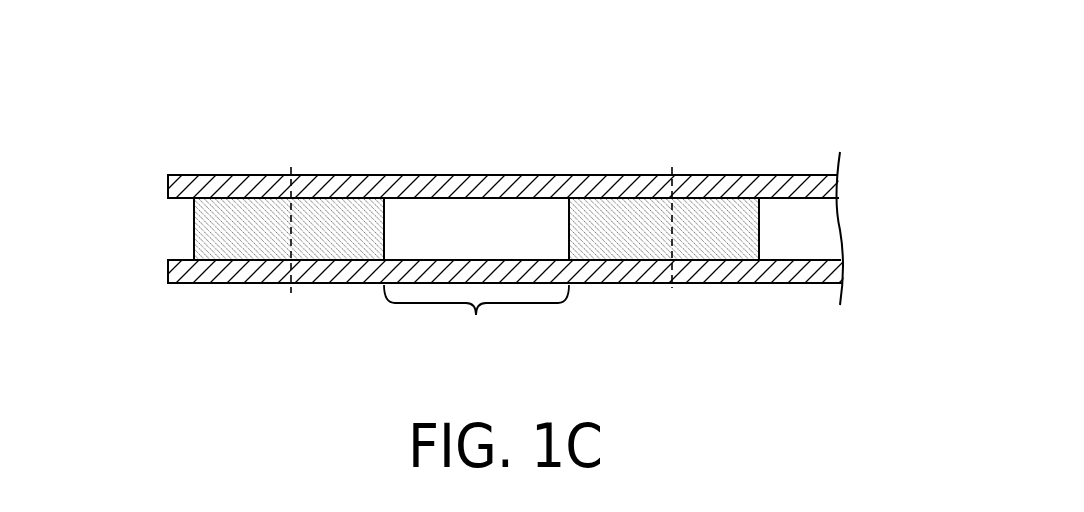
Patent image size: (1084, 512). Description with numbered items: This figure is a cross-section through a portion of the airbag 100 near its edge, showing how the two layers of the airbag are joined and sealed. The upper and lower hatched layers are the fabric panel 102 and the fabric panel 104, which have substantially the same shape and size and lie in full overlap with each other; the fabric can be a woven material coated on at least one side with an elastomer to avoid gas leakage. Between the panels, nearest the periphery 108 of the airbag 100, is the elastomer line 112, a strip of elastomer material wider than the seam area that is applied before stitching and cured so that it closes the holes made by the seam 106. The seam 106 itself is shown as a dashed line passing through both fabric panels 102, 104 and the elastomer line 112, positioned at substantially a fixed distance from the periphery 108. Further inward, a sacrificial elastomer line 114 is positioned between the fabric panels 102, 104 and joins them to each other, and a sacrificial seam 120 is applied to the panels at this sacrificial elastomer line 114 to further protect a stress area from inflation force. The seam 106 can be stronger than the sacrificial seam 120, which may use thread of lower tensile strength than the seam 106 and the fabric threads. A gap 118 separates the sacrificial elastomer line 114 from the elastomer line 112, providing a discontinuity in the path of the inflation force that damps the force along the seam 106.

The airbag 100 is at (748, 48).
The fabric panel 102 is at (513, 175).
The fabric panel 104 is at (700, 283).
The seam 106 is at (291, 167).
The periphery 108 is at (168, 190).
The elastomer line 112 is at (194, 237).
The sacrificial elastomer line 114 is at (569, 233).
The gap 118 is at (476, 317).
The sacrificial seam 120 is at (672, 167).